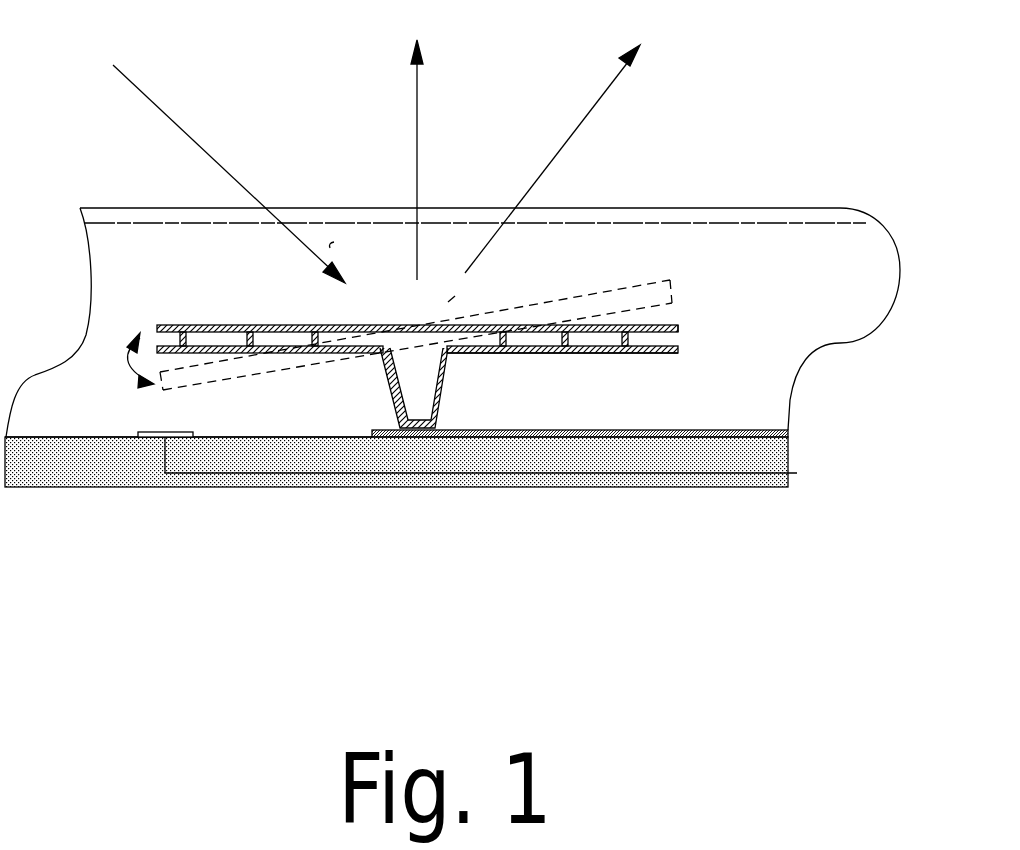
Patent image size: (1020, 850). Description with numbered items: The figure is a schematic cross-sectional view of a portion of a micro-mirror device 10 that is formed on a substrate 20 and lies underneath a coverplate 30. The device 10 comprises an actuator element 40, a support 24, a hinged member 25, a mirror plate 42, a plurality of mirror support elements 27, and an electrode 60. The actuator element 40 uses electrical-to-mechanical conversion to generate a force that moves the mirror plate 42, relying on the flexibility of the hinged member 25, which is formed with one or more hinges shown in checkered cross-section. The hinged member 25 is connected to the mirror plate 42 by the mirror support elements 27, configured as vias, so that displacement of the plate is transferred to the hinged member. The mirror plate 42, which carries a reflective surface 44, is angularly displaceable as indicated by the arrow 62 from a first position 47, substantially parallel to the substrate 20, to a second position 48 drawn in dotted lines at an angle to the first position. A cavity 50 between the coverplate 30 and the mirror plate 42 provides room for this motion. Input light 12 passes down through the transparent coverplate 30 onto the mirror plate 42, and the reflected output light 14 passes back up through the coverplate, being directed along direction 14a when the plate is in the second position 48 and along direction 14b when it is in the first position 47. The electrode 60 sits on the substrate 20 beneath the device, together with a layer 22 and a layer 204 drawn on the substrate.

The micro-mirror device 10 is at (199, 253).
The input light arrow 12 is at (145, 88).
The output light 14 is at (510, 26).
The output light direction 14a is at (418, 118).
The output light direction 14b is at (608, 82).
The substrate 20 is at (600, 487).
The substrate top surface 22 is at (57, 437).
The support 24 is at (447, 385).
The hinged member 25 is at (540, 353).
The mirror support elements 27 is at (182, 325).
The coverplate 30 is at (653, 208).
The actuator element 40 is at (452, 298).
The mirror plate 42 is at (213, 325).
The reflective surface 44 is at (310, 325).
The first position 47 is at (680, 325).
The second position 48 is at (667, 283).
The cavity 50 is at (331, 248).
The electrode 60 is at (163, 432).
The arrow 62 is at (138, 368).
The bottom electrode layer 204 is at (657, 430).